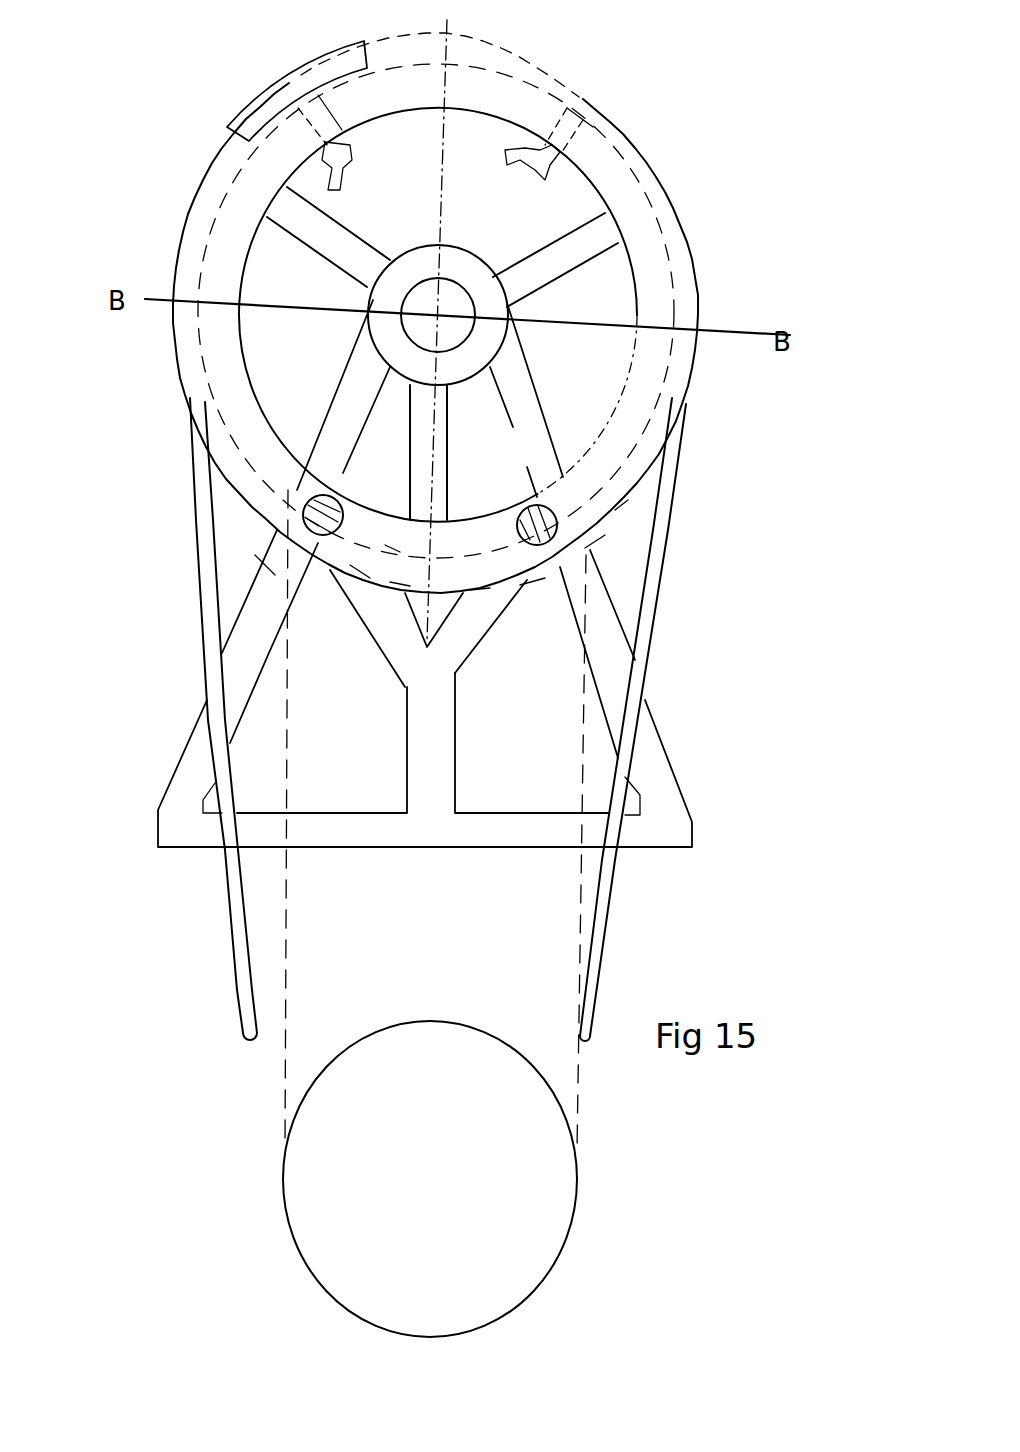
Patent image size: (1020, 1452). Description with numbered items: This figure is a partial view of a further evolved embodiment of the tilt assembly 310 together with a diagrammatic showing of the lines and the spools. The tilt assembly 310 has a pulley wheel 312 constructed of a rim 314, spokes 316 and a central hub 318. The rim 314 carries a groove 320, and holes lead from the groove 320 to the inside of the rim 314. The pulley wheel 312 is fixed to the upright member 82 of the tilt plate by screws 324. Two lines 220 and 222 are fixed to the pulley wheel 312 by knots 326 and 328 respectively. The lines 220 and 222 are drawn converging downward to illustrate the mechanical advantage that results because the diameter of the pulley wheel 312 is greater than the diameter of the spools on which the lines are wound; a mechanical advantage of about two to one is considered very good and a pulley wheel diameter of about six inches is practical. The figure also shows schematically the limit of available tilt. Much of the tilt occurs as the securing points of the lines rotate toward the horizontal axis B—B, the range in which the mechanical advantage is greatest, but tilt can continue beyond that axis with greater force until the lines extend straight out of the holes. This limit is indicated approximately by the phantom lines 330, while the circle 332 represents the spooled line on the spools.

The upright member 82 is at (668, 720).
The line 220 is at (198, 615).
The line 222 is at (655, 620).
The tilt assembly 310 is at (718, 537).
The pulley wheel 312 is at (700, 245).
The rim 314 is at (668, 172).
The spokes 316 is at (545, 270).
The hub 318 is at (470, 252).
The groove 320 is at (258, 138).
The screws 324 is at (572, 110).
The knot 326 is at (350, 152).
The knot 328 is at (505, 165).
The phantom lines 330 is at (294, 912).
The circle 332 is at (360, 43).